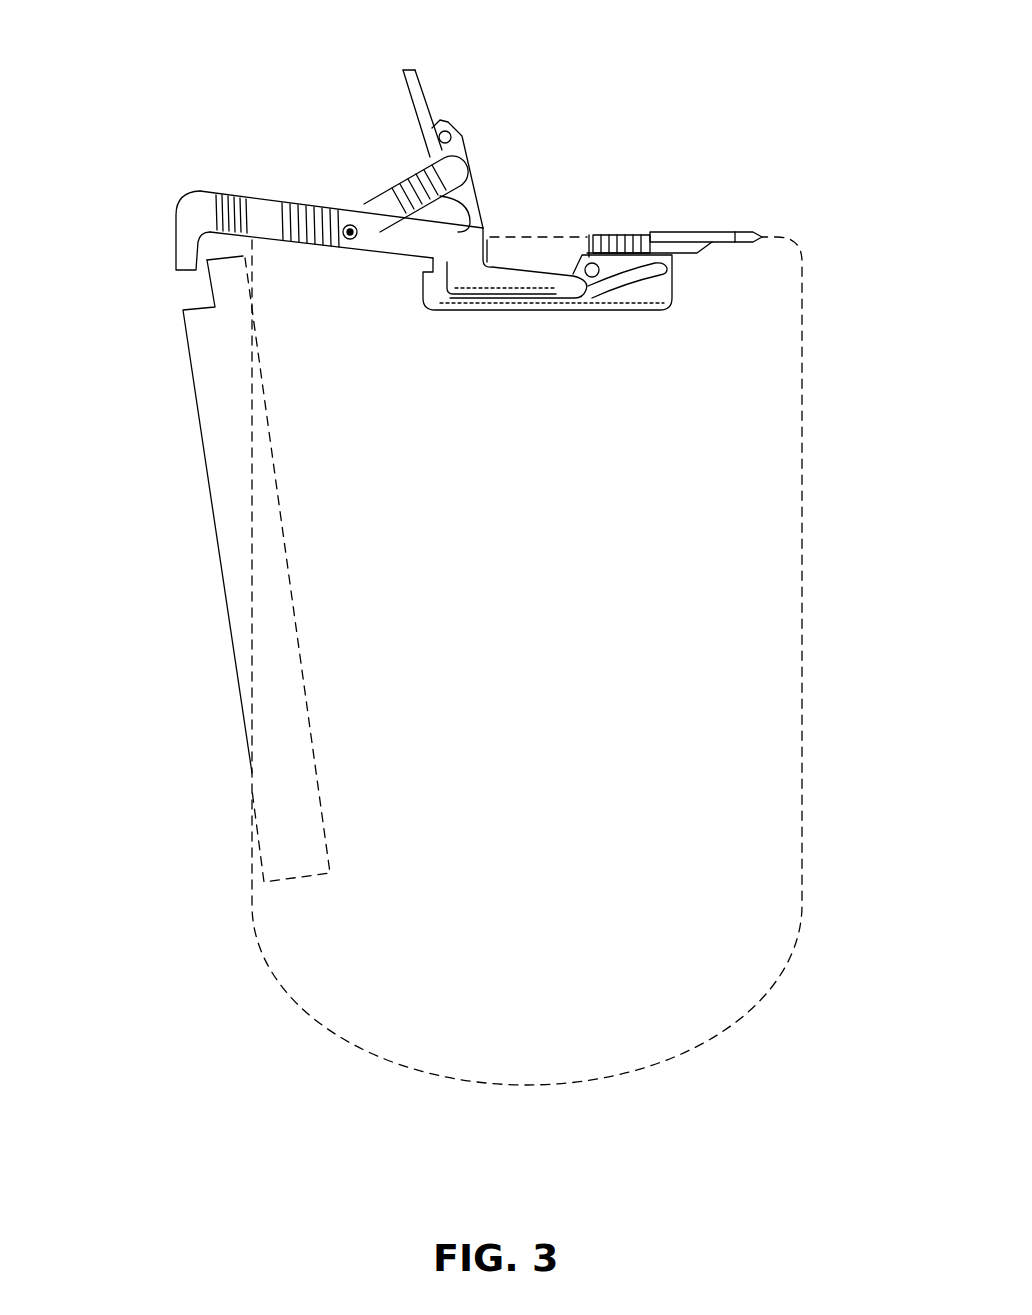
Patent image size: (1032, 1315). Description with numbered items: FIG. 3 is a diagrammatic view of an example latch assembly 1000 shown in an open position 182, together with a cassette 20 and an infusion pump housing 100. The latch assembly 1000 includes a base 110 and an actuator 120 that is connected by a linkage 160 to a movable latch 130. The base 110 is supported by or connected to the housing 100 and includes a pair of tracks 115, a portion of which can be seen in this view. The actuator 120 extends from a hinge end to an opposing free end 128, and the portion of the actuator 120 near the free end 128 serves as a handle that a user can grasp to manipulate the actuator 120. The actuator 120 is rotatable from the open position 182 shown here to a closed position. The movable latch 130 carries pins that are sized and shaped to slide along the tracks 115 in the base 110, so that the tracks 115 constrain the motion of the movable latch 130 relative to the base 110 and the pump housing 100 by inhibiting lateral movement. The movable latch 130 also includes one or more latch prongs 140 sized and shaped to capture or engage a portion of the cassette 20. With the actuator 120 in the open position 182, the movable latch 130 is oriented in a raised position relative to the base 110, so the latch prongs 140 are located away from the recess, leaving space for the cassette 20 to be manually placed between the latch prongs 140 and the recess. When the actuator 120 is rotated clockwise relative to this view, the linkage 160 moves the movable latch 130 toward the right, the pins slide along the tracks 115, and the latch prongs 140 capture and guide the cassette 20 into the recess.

The latch assembly 1000 is at (665, 128).
The infusion pump housing 100 is at (803, 517).
The cassette 20 is at (210, 520).
The movable latch 130 is at (248, 190).
The latch prongs 140 is at (152, 270).
The linkage 160 is at (376, 200).
The actuator 120 is at (408, 118).
The free end 128 is at (401, 80).
The open position 182 is at (419, 68).
The base 110 is at (616, 317).
The tracks 115 is at (668, 283).